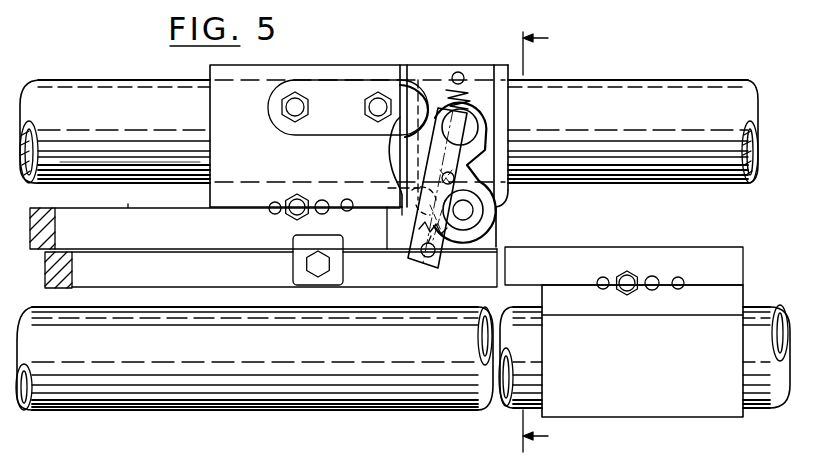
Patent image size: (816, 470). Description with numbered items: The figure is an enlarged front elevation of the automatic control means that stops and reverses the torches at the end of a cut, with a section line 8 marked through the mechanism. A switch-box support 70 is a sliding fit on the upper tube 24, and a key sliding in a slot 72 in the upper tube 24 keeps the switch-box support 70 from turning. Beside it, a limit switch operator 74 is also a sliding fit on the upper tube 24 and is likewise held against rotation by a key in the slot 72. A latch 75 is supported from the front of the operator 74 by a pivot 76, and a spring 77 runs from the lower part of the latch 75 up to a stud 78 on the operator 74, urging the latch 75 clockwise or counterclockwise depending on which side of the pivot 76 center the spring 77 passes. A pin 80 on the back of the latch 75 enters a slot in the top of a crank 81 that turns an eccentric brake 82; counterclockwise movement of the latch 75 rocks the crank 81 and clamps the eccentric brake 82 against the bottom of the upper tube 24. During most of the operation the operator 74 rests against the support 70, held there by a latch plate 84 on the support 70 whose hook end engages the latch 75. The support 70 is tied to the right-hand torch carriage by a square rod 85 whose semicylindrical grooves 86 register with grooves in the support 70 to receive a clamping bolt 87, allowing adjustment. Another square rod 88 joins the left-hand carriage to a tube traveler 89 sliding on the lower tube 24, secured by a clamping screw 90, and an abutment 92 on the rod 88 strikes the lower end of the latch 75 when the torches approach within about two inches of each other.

The upper tube 24 is at (58, 96).
The slot 72 is at (80, 165).
The switch-box support 70 is at (215, 107).
The latch plate 84 is at (338, 124).
The latch 75 is at (395, 162).
The crank 81 is at (392, 187).
The limit switch operator 74 is at (508, 98).
The eccentric brake 82 is at (510, 195).
The pivot 76 is at (470, 126).
The stud 78 is at (455, 72).
The spring 77 is at (470, 96).
The pin 80 is at (437, 188).
The square rod 85 is at (32, 218).
The square rod 88 is at (45, 258).
The clamping bolt 87 is at (270, 212).
The semicylindrical grooves 86 is at (346, 203).
The abutment 92 is at (292, 258).
The clamping screw 90 is at (636, 290).
The tube traveler 89 is at (690, 406).
The section line 8- 8 is at (542, 240).